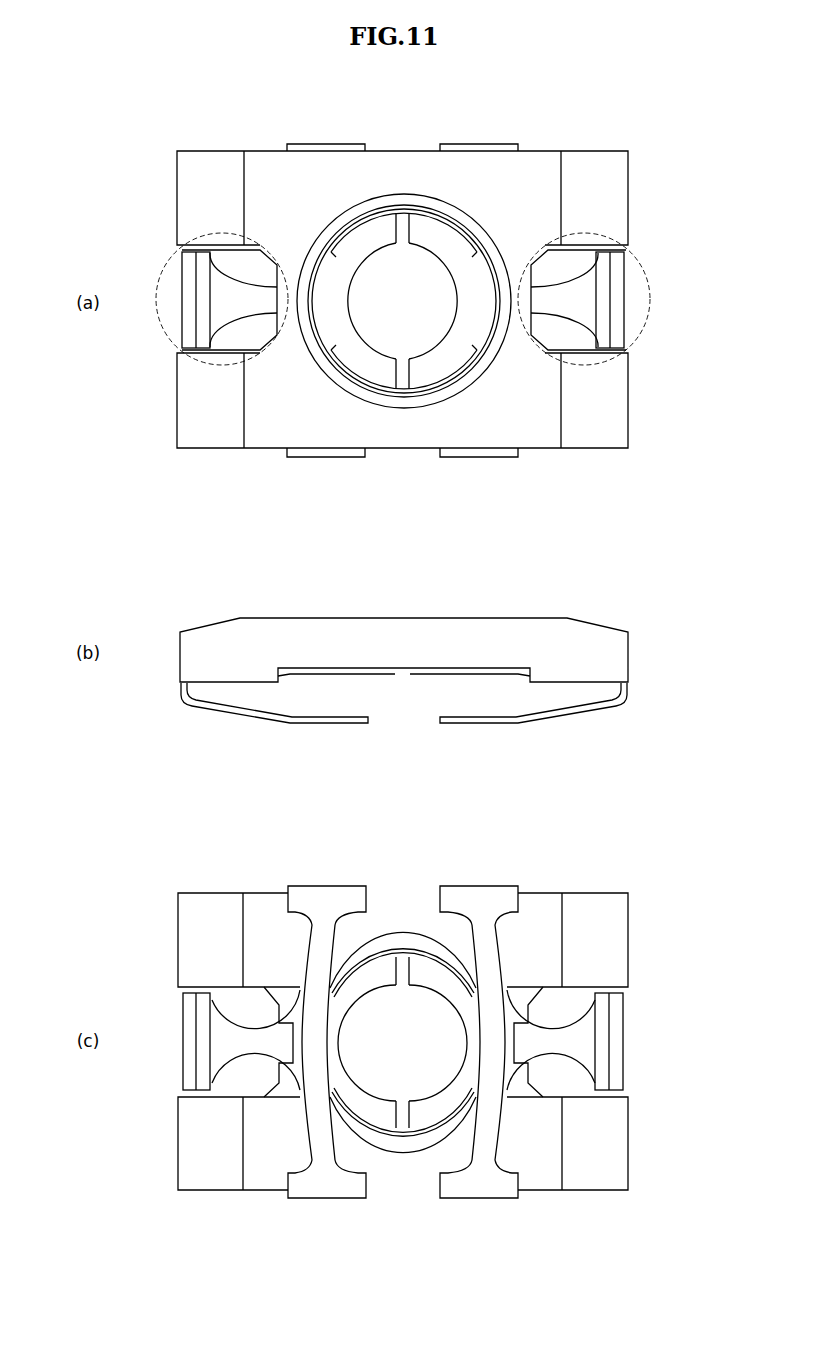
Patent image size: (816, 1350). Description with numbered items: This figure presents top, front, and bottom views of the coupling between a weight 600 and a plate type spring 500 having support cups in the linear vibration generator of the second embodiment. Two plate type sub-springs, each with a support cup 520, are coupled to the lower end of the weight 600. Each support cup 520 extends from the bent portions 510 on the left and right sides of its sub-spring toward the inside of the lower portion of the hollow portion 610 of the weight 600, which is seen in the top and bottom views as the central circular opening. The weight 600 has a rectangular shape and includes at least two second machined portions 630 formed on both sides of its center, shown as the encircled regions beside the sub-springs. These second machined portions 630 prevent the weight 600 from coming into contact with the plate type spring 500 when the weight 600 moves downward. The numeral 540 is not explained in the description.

The plate type spring 500 is at (210, 312).
The bent portion 510 is at (635, 296).
The support cup 520 is at (437, 372).
The elastic portion 540 is at (565, 315).
The weight 600 is at (600, 178).
The hollow portion 610 is at (420, 272).
The second machined portion 630 is at (183, 250).